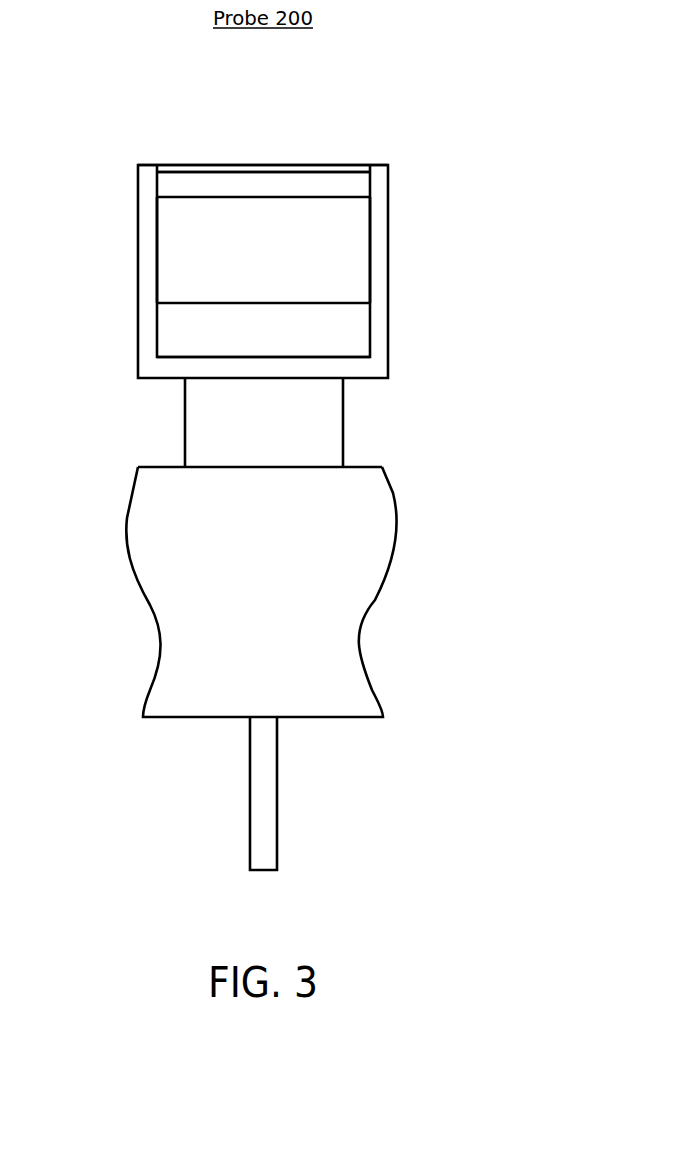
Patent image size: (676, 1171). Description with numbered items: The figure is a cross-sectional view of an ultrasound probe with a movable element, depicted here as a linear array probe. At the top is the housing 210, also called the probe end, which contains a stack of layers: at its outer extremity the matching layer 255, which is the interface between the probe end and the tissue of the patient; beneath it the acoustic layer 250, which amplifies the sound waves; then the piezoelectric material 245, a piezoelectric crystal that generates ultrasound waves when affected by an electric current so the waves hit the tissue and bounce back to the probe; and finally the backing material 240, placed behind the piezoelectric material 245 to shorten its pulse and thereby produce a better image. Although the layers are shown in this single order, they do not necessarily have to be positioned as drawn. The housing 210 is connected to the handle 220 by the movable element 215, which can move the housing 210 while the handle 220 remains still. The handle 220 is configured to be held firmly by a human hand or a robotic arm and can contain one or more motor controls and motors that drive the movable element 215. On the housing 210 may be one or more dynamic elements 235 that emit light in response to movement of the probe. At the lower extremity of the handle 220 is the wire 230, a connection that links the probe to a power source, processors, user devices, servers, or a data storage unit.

The housing 210 is at (148, 203).
The movable element 215 is at (197, 400).
The handle 220 is at (367, 587).
The wire 230 is at (262, 757).
The dynamic element 235 is at (337, 493).
The backing material 240 is at (357, 325).
The piezoelectric material 245 is at (348, 240).
The acoustic layer 250 is at (357, 192).
The matching layer 255 is at (347, 162).